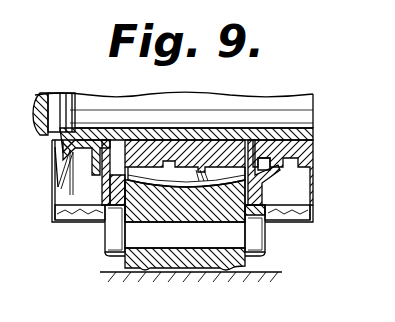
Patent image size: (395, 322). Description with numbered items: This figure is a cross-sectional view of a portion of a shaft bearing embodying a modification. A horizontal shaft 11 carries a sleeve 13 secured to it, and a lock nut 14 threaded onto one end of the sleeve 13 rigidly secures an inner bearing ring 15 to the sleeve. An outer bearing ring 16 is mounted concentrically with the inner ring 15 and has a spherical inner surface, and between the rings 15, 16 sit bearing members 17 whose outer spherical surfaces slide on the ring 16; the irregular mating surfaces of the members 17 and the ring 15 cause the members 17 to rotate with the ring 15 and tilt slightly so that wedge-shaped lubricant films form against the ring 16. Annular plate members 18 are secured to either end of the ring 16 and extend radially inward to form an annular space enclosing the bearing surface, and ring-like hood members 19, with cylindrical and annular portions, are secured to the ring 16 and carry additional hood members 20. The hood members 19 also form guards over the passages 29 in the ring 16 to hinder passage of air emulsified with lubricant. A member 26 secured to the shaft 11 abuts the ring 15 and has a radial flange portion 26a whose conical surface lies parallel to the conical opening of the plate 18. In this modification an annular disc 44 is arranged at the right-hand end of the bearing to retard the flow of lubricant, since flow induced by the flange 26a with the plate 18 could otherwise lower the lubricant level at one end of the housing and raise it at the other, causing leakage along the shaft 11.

The horizontal shaft 11 is at (285, 103).
The sleeve 13 is at (170, 140).
The lock nut 14 is at (302, 142).
The inner bearing ring 15 is at (208, 142).
The outer bearing ring 16 is at (186, 276).
The bearing members 17 is at (186, 177).
The annular plate members 18 is at (108, 224).
The hood members 19 is at (106, 255).
The hood members 20 is at (63, 218).
The member 26 is at (80, 150).
The radial flange portion 26a is at (109, 150).
The passages 29 is at (185, 218).
The annular disc 44 is at (270, 172).